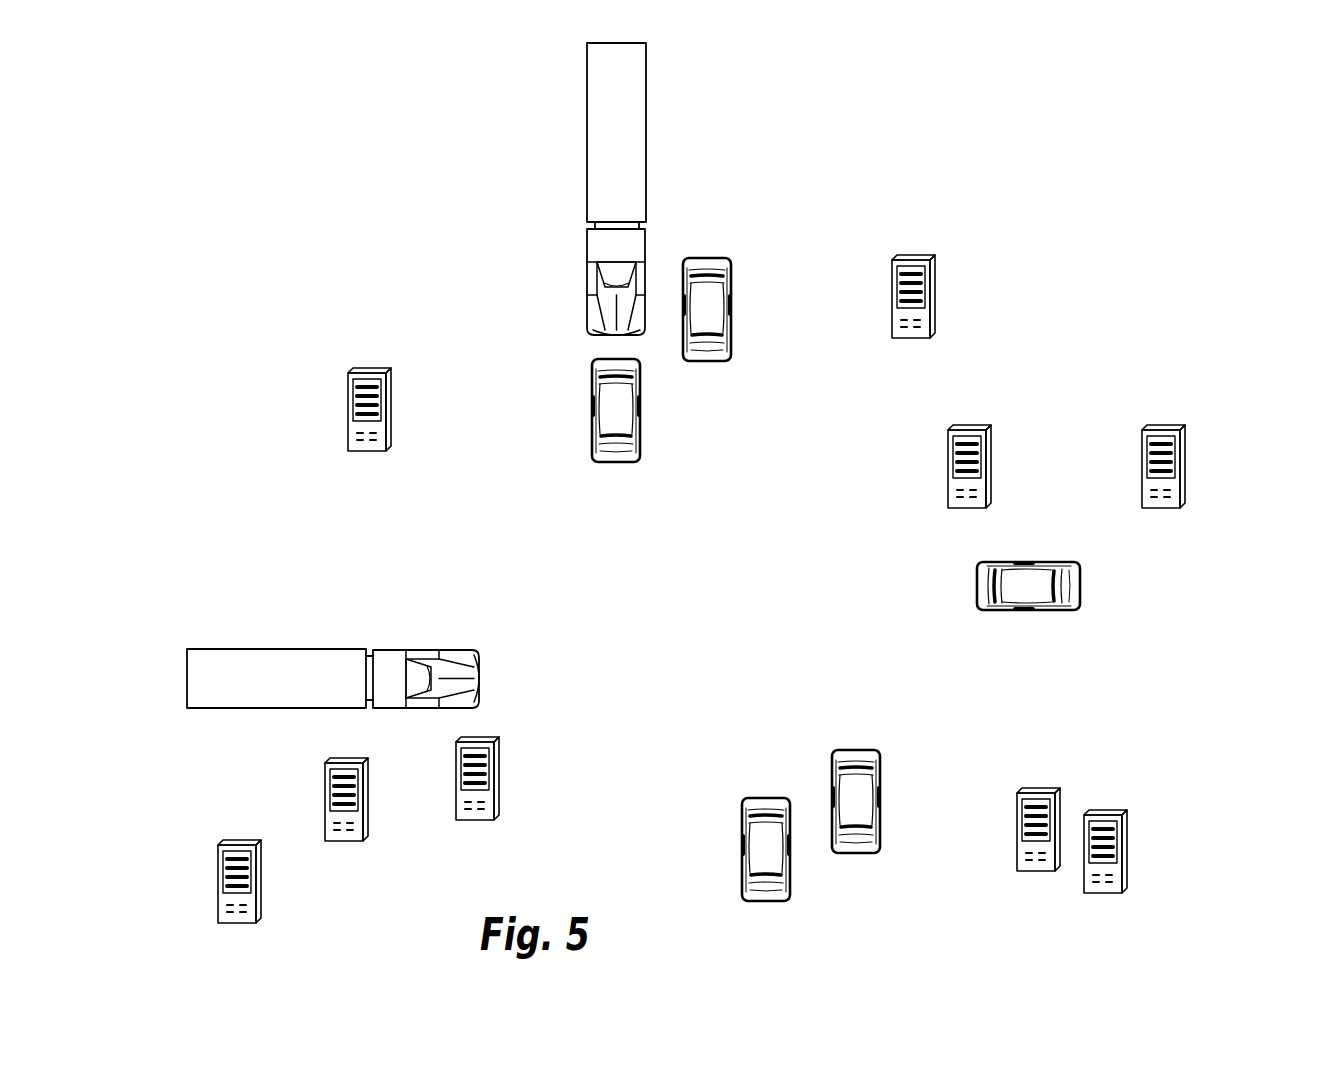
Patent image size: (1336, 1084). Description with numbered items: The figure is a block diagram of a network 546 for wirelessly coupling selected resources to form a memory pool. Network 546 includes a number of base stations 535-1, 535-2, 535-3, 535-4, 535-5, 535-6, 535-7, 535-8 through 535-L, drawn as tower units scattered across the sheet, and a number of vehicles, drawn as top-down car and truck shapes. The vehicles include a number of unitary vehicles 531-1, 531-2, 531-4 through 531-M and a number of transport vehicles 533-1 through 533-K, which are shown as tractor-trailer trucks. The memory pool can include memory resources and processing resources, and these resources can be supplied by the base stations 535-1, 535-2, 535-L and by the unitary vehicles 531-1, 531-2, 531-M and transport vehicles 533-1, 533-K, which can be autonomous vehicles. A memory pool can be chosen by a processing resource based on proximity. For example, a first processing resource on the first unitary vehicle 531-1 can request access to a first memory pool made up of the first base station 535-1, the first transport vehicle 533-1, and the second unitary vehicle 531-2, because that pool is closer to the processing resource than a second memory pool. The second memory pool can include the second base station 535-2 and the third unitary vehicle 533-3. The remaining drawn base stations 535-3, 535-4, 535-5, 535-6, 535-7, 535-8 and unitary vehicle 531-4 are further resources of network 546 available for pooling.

The network 546 is at (248, 155).
The first transport vehicle 533-1 is at (595, 173).
The transport vehicle 533-K is at (330, 661).
The third unitary vehicle 533-3 is at (1033, 601).
The first unitary vehicle 531-1 is at (731, 306).
The second unitary vehicle 531-2 is at (641, 407).
The vehicle 531-4 is at (878, 805).
The unitary vehicle 531-M is at (742, 843).
The base station 535-L is at (348, 407).
The first base station 535-1 is at (935, 293).
The second base station 535-2 is at (992, 463).
The roadside unit 535-3 is at (1187, 463).
The roadside unit 535-4 is at (1017, 848).
The roadside unit 535-5 is at (1130, 848).
The roadside unit 535-6 is at (218, 877).
The roadside unit 535-7 is at (325, 798).
The roadside unit 535-8 is at (499, 779).